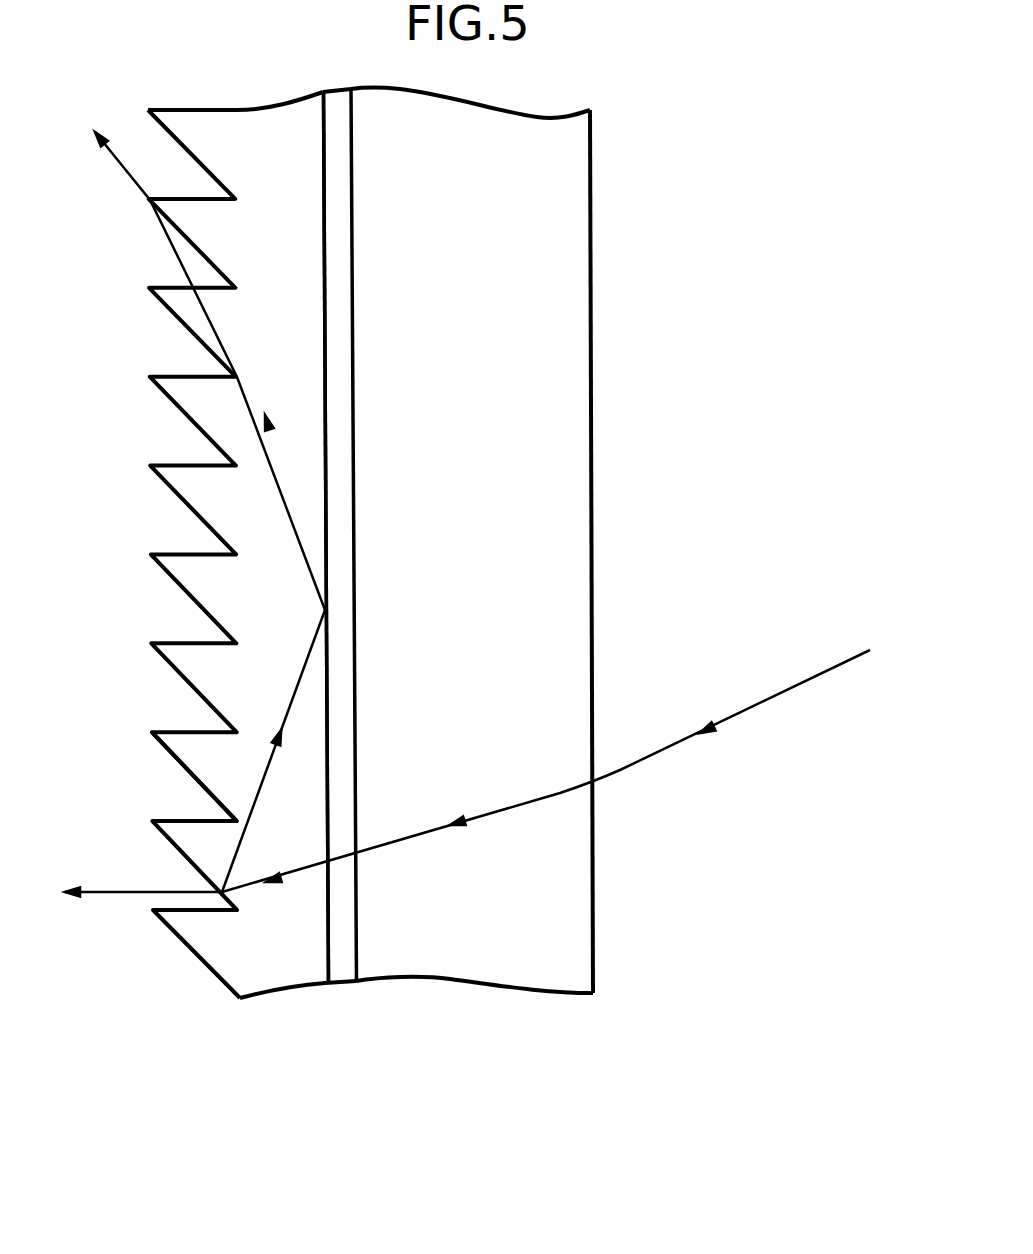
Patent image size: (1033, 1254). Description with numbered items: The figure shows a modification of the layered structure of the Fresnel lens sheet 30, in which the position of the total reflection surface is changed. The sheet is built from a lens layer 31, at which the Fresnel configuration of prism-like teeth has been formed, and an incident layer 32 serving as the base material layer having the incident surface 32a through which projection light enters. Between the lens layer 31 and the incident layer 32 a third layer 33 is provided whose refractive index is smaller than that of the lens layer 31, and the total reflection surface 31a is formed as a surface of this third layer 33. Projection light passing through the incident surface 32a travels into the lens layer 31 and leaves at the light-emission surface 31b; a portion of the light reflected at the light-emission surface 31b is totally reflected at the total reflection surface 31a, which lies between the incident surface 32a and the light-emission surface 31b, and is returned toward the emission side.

The Fresnel lens sheet 30 is at (377, 652).
The lens layer 31 is at (254, 594).
The total reflection surface 31a is at (327, 821).
The light-emission surface 31b is at (173, 847).
The incident layer 32 is at (526, 595).
The incident surface 32a is at (593, 907).
The third layer 33 is at (340, 968).